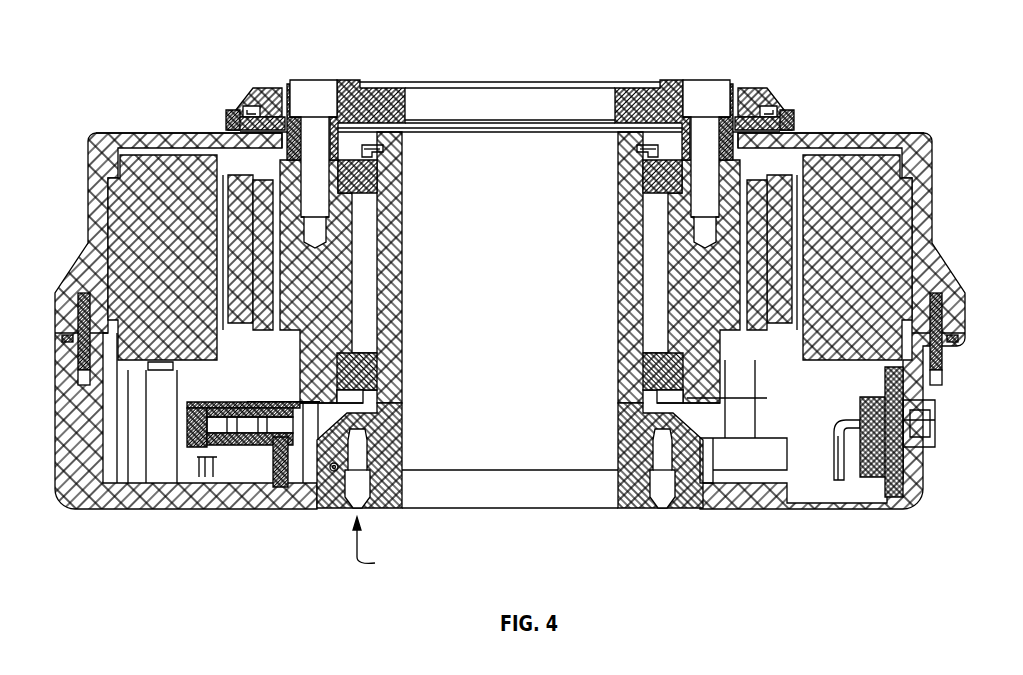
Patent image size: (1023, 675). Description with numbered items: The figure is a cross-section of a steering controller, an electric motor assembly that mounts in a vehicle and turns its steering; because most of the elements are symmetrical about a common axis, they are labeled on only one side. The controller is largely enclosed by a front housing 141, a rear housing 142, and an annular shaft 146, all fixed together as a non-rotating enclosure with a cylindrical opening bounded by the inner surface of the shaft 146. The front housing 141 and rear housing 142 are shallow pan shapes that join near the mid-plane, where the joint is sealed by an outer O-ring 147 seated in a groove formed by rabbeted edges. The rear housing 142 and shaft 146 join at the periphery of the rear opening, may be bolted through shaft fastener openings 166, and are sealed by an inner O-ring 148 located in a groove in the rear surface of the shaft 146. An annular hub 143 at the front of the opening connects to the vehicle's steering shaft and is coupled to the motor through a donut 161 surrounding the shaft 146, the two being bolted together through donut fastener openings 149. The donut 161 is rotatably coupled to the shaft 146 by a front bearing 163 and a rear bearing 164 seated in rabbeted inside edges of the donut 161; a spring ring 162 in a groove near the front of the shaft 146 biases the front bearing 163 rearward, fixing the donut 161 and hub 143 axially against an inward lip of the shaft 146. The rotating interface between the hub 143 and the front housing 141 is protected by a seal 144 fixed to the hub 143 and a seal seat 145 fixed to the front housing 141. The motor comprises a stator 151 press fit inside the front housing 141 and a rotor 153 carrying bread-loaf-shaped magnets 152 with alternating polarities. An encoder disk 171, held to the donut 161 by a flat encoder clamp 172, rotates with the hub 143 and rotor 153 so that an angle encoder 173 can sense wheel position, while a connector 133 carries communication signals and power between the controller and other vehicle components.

The connector 133 is at (935, 428).
The front housing 141 is at (93, 170).
The rear housing 142 is at (63, 407).
The hub 143 is at (345, 85).
The seal 144 is at (273, 92).
The seal seat 145 is at (227, 122).
The shaft 146 is at (398, 433).
The outer O-ring 147 is at (62, 336).
The inner O-ring 148 is at (333, 480).
The donut fastener openings 149 is at (313, 72).
The stator 151 is at (108, 122).
The magnets 152 is at (140, 165).
The rotor 153 is at (240, 185).
The donut 161 is at (340, 270).
The spring ring 162 is at (383, 148).
The front bearing 163 is at (375, 185).
The rear bearing 164 is at (368, 375).
The shaft fastener openings 166 is at (378, 545).
The encoder disk 171 is at (262, 400).
The encoder clamp 172 is at (317, 467).
The angle encoder 173 is at (233, 447).